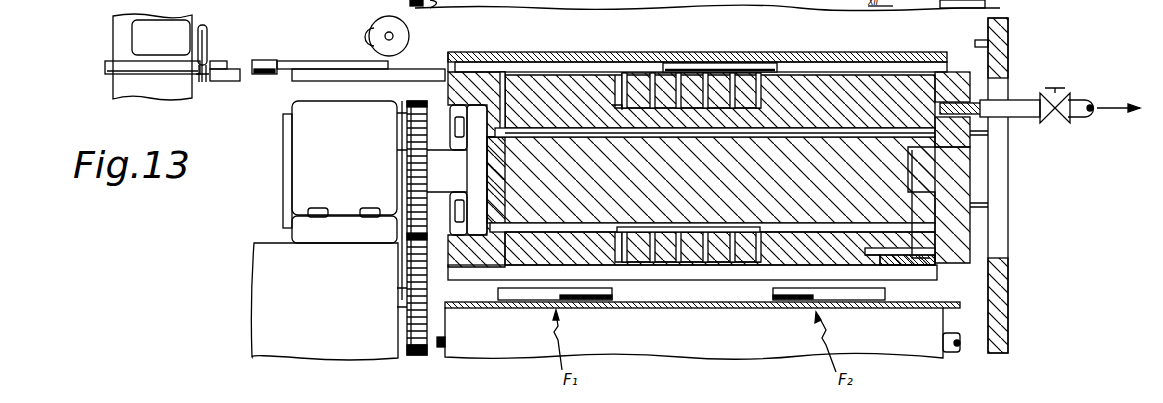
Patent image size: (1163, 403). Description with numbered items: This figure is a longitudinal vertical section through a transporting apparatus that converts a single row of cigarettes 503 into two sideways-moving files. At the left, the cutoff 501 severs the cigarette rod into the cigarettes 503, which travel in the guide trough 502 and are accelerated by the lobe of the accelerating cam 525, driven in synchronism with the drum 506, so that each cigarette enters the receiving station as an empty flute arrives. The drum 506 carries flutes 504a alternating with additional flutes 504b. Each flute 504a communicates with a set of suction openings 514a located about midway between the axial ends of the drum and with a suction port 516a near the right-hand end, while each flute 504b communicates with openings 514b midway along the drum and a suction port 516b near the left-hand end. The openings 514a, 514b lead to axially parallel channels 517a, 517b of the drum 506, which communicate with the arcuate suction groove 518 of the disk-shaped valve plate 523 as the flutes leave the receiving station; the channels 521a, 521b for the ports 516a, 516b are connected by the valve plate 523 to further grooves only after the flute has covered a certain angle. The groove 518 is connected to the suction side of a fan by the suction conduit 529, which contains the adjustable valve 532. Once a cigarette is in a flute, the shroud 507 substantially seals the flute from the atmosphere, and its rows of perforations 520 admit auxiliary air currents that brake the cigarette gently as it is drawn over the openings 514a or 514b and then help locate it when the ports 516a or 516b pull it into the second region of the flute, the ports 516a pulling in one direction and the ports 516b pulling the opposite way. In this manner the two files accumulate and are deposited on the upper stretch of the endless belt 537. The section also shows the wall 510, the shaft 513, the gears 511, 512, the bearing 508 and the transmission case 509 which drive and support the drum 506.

The cutoff 501 is at (145, 33).
The guide trough 502 is at (227, 78).
The cigarettes 503 is at (212, 65).
The flutes 504a is at (495, 275).
The additional flutes 504b is at (560, 68).
The drum 506 is at (458, 90).
The shroud 507 is at (480, 56).
The bearing 508 is at (310, 140).
The transmission case 509 is at (272, 262).
The wall 510 is at (998, 305).
The gear 511 is at (410, 107).
The gear 512 is at (420, 318).
The shaft 513 is at (437, 168).
The suction openings 514a is at (680, 265).
The suction openings 514b is at (664, 72).
The suction port 516a is at (882, 265).
The suction port 516b is at (502, 72).
The channels 517a is at (775, 232).
The channels 517b is at (828, 108).
The suction groove 518 is at (948, 75).
The perforations 520 is at (715, 62).
The channels 521a is at (912, 252).
The channels 521b is at (783, 132).
The valve plate 523 is at (950, 178).
The accelerating cam 525 is at (372, 38).
The suction conduit 529 is at (1015, 108).
The adjustable valve 532 is at (1065, 108).
The endless belt 537 is at (482, 308).